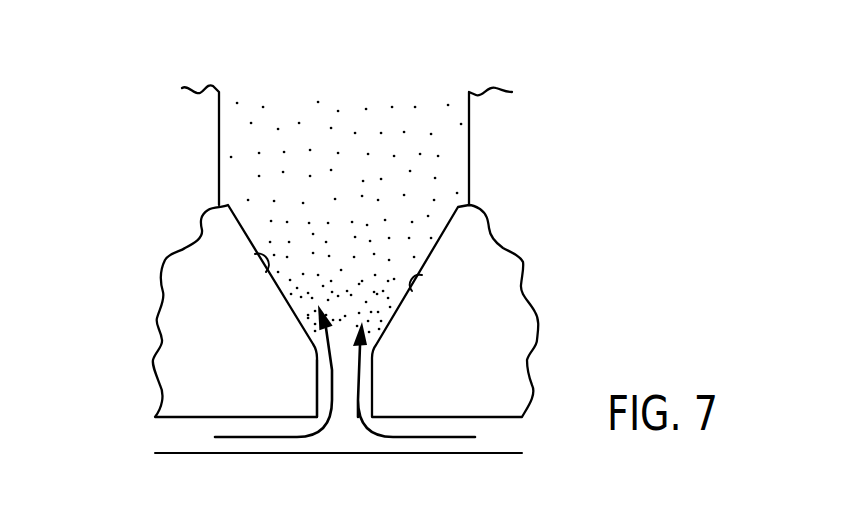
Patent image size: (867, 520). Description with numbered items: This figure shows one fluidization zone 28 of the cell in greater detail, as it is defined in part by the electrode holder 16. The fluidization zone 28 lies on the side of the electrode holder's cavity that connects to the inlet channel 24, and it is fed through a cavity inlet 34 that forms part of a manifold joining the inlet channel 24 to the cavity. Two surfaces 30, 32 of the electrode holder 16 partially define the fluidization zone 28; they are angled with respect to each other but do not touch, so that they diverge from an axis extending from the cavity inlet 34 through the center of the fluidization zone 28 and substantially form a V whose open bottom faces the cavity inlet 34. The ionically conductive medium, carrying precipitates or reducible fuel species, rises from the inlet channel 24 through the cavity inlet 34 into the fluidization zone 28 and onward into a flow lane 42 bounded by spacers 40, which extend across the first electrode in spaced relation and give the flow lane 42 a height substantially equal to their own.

The electrode holder 16 is at (455, 377).
The inlet channel 24 is at (507, 445).
The fluidization zone 28 is at (385, 248).
The surface 30 is at (255, 254).
The surface 32 is at (422, 275).
The cavity inlet 34 is at (322, 395).
The spacer 40 is at (219, 151).
The flow lane 42 is at (360, 150).